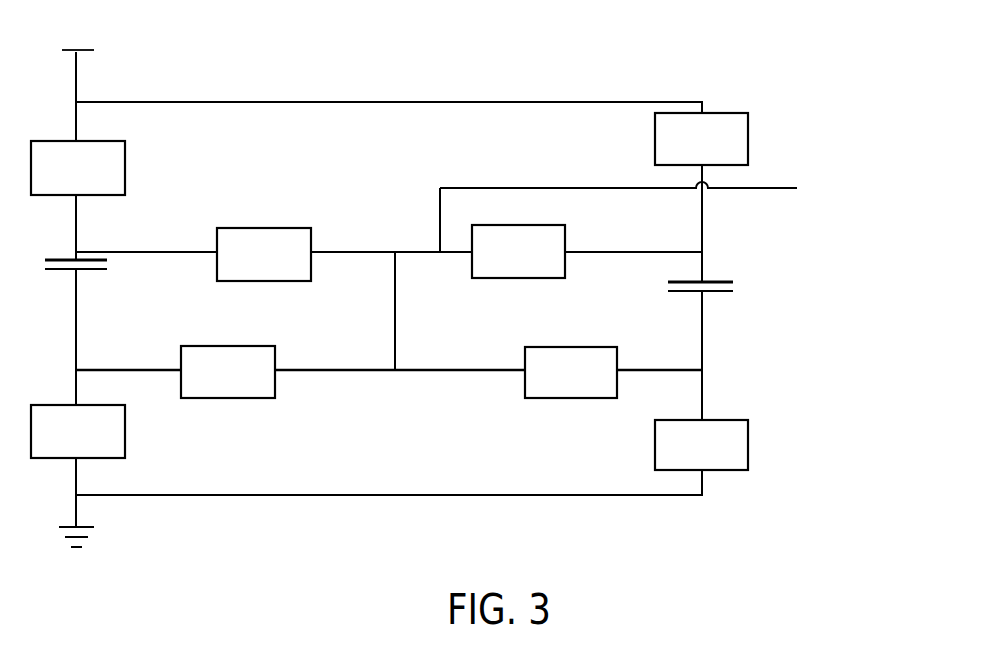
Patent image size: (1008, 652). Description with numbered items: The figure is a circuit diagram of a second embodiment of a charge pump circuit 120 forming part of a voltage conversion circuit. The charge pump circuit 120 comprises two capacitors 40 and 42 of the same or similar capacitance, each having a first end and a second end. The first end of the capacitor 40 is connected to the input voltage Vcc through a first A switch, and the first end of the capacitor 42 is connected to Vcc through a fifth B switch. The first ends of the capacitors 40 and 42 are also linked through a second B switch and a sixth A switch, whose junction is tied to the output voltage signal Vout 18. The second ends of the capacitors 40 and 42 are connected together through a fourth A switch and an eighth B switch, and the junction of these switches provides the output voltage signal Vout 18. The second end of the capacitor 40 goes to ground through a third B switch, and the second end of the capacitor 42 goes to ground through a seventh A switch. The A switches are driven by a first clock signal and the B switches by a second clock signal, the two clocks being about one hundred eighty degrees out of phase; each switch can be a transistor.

The charge pump circuit 120 is at (393, 437).
The capacitor 40 is at (62, 270).
The capacitor 42 is at (720, 291).
The output voltage signal Vout 18 is at (672, 190).